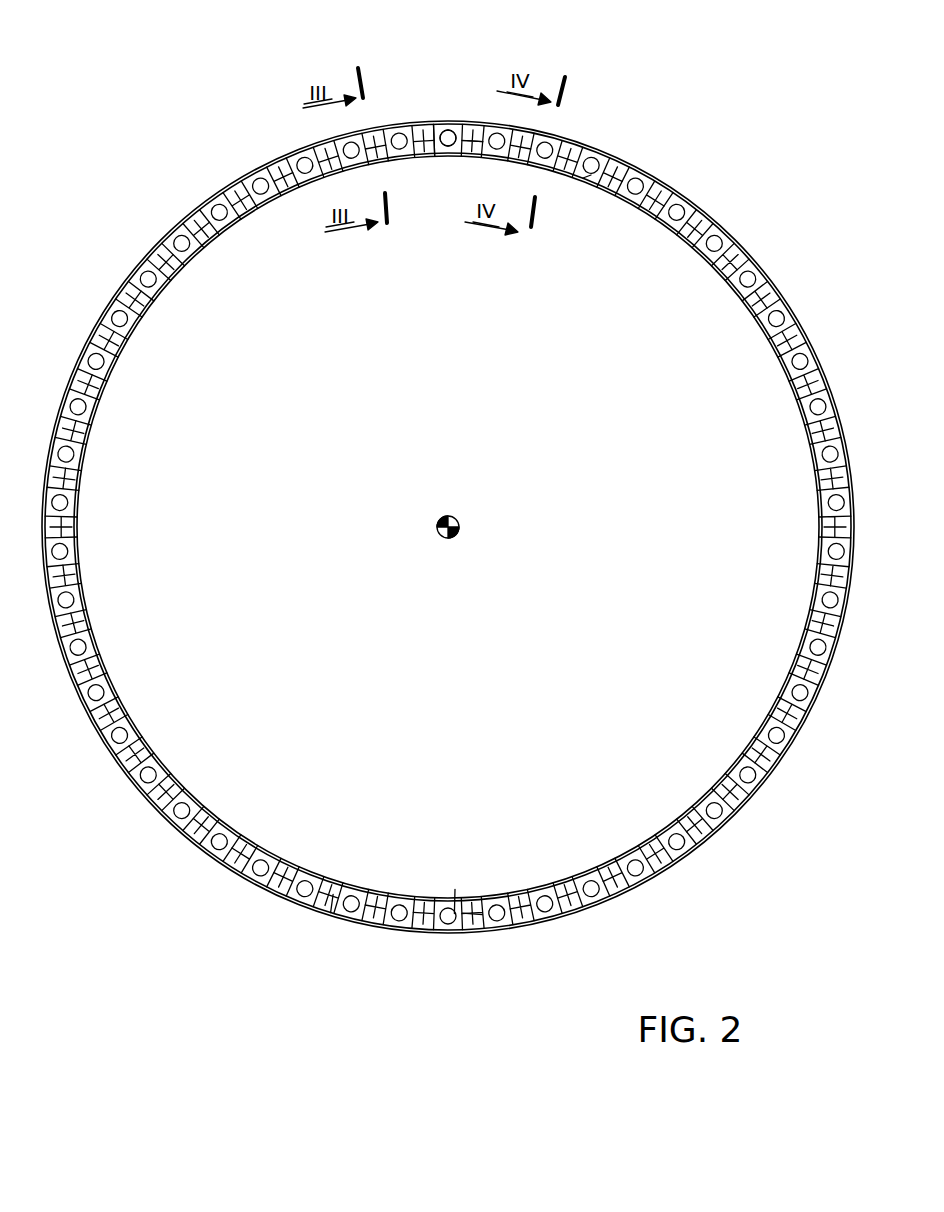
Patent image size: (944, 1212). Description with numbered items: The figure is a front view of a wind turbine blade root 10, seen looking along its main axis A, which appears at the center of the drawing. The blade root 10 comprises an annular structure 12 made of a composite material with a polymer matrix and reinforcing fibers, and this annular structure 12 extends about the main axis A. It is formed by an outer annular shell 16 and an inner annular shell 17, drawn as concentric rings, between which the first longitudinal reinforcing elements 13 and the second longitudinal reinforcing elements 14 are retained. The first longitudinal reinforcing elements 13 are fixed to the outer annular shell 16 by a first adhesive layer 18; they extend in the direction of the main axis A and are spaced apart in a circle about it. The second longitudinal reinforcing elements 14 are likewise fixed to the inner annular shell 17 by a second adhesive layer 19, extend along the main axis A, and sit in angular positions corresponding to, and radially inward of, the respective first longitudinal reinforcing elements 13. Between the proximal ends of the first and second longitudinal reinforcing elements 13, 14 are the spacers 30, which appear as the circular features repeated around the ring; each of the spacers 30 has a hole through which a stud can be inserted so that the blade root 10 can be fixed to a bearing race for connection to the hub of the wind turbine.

The blade root 10 is at (666, 120).
The annular structure 12 is at (241, 898).
The first longitudinal reinforcing elements 13 is at (294, 158).
The second longitudinal reinforcing elements 14 is at (325, 168).
The outer annular shell 16 is at (338, 906).
The inner annular shell 17 is at (483, 905).
The first adhesive layer 18 is at (448, 123).
The second adhesive layer 19 is at (583, 178).
The spacers 30 is at (398, 130).
The main axis A is at (460, 517).